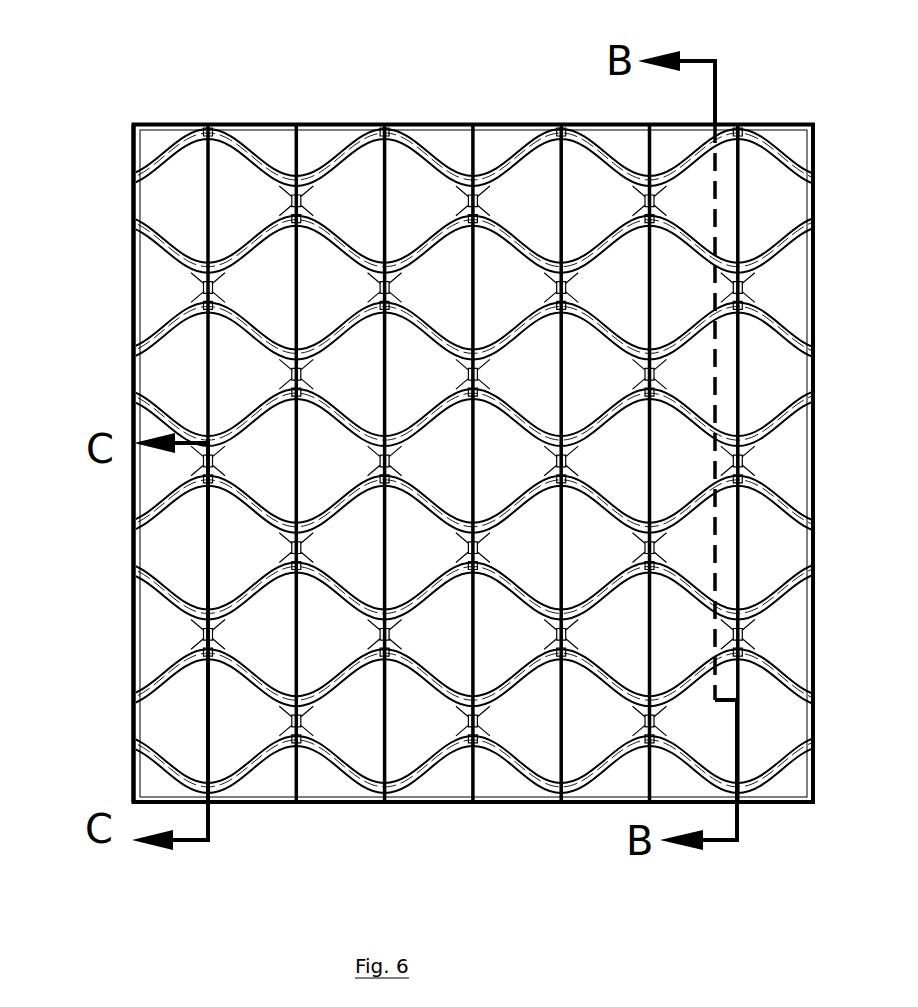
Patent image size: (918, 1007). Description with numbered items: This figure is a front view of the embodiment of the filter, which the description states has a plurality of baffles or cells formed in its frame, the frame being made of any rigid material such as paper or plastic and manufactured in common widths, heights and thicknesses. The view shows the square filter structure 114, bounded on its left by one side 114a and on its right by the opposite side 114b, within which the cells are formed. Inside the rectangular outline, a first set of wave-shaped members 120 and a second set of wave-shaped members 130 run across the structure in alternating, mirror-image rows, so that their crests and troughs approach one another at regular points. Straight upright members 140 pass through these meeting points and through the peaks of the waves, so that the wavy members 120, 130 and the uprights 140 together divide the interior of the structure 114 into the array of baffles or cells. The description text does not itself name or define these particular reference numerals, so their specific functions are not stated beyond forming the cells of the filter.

The panel 114 is at (110, 98).
The first side edge of panel 114a is at (133, 655).
The second side edge of panel 114b is at (815, 142).
The first set of wave-shaped ribs 120 is at (136, 165).
The second set of wave-shaped ribs 130 is at (136, 227).
The longitudinal ribs 140 is at (213, 178).